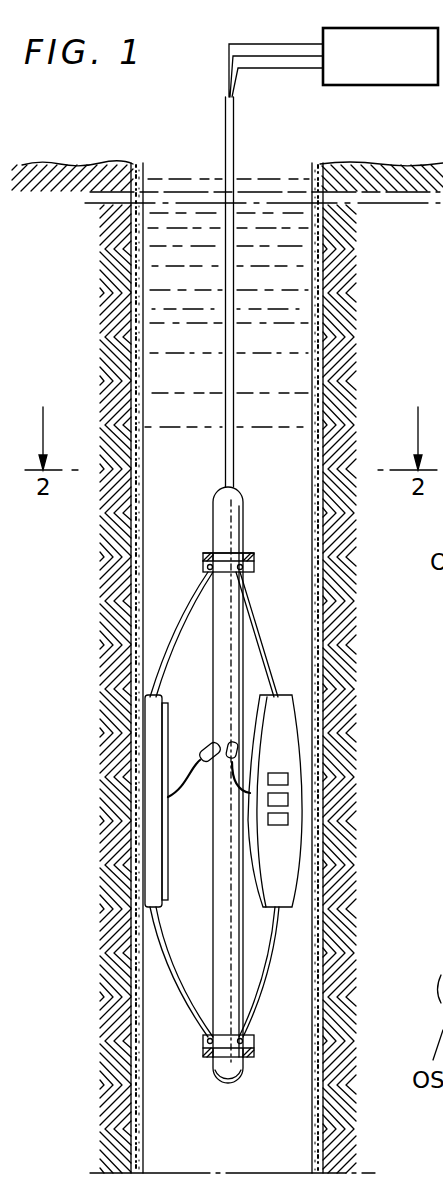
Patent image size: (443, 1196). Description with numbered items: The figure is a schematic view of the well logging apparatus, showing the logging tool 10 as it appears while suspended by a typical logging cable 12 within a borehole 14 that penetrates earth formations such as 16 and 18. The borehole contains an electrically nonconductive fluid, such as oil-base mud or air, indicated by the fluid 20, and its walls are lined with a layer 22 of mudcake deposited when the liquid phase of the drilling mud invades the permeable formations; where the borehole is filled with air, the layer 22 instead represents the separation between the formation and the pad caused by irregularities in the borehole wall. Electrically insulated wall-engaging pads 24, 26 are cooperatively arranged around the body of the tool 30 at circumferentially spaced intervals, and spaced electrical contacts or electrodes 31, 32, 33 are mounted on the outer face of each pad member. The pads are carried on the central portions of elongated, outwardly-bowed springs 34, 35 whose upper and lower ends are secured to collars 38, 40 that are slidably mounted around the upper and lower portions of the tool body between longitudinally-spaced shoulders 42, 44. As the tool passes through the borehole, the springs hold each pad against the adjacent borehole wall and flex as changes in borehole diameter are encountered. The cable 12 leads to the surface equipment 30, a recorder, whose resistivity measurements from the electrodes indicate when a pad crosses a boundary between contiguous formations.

The logging tool 10 is at (214, 666).
The logging cable 12 is at (234, 145).
The borehole 14 is at (283, 297).
The earth formation 16 is at (372, 407).
The earth formation 18 is at (383, 1024).
The well fluid 20 is at (196, 388).
The layer of mudcake 22 is at (75, 310).
The wall-engaging pad 24 is at (292, 877).
The wall-engaging pad 26 is at (148, 839).
The tool body / surface equipment 30 is at (399, 27).
The electrode 31 is at (288, 779).
The electrode 32 is at (288, 800).
The electrode 33 is at (288, 820).
The outwardly-bowed spring 34 is at (268, 974).
The outwardly-bowed spring 35 is at (192, 1008).
The collar 38 is at (255, 568).
The collar 40 is at (255, 1042).
The shoulder 42 is at (207, 552).
The shoulder 44 is at (252, 1055).